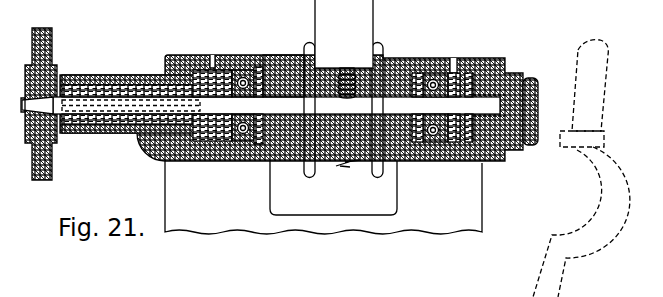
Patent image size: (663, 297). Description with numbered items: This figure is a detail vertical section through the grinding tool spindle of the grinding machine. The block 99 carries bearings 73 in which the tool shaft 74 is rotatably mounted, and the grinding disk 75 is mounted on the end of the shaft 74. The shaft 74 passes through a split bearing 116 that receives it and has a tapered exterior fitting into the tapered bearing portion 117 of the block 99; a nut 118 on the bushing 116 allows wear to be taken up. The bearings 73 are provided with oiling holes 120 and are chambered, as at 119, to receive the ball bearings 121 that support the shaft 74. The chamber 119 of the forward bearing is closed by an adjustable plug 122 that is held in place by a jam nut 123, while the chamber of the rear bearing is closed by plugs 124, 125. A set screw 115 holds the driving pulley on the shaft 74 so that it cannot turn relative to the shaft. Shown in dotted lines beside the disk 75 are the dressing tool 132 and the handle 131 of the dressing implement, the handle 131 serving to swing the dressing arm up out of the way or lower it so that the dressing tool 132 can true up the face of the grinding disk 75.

The bearings 73 is at (177, 56).
The tool shaft 74 is at (95, 108).
The grinding disk 75 is at (50, 42).
The block 99 is at (173, 182).
The set screw 115 is at (343, 69).
The bearing 116 is at (132, 100).
The tapered bearing portion 117 is at (100, 88).
The nut 118 is at (62, 78).
The chamber 119 is at (223, 150).
The oiling holes 120 is at (215, 63).
The ball bearings 121 is at (248, 64).
The adjustable plug 122 is at (283, 163).
The jam nut 123 is at (287, 64).
The plug 124 is at (382, 171).
The plug 125 is at (532, 94).
The handle 131 is at (593, 122).
The dressing tool 132 is at (573, 158).